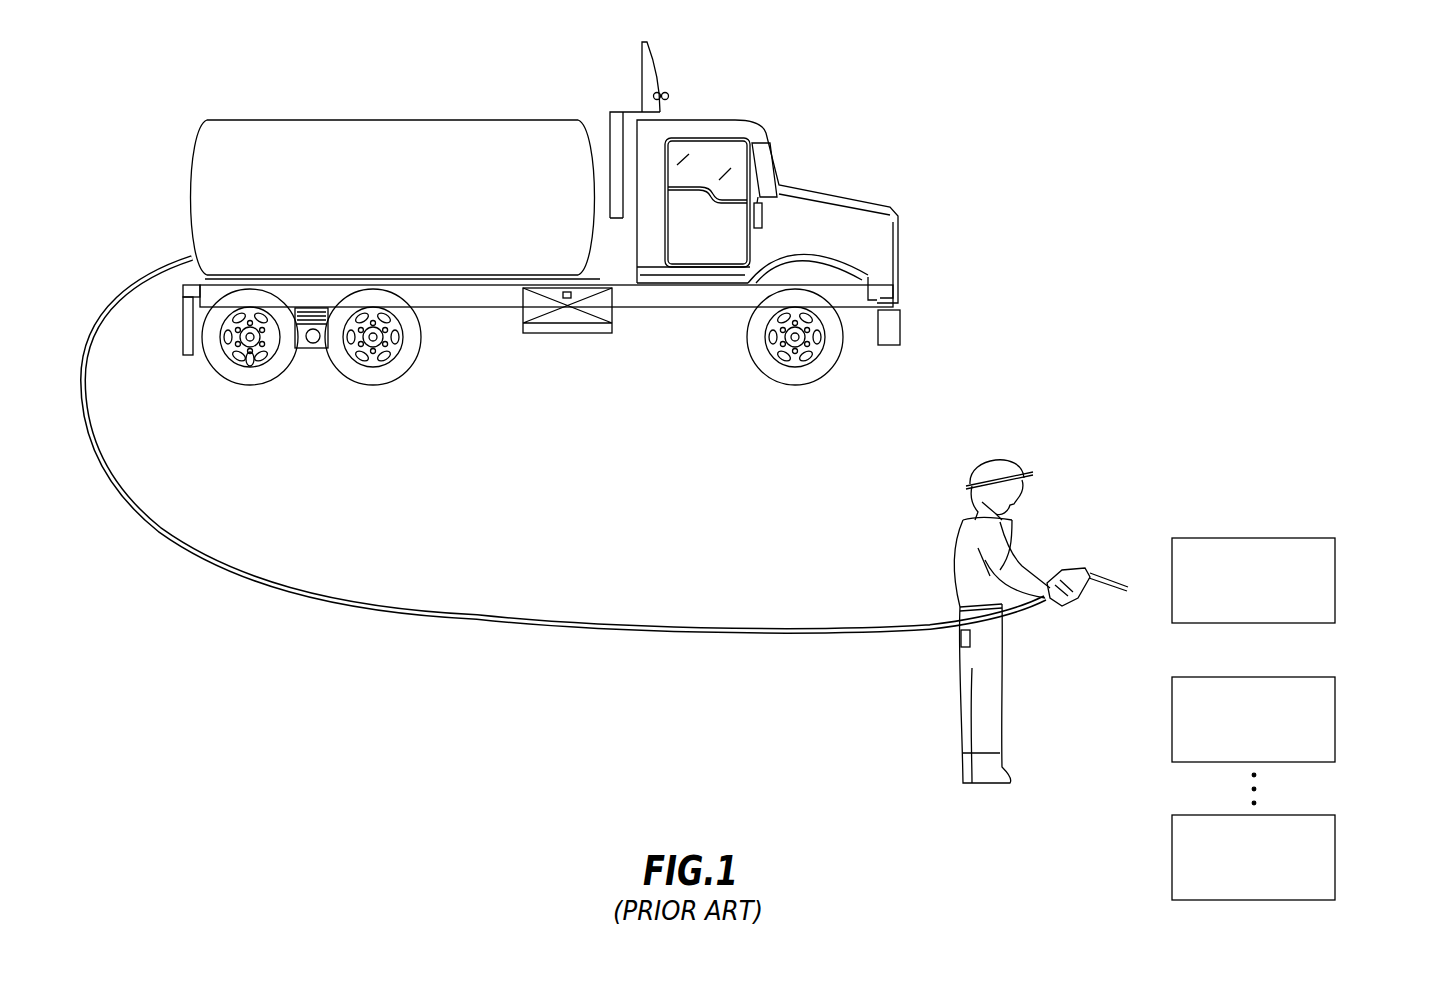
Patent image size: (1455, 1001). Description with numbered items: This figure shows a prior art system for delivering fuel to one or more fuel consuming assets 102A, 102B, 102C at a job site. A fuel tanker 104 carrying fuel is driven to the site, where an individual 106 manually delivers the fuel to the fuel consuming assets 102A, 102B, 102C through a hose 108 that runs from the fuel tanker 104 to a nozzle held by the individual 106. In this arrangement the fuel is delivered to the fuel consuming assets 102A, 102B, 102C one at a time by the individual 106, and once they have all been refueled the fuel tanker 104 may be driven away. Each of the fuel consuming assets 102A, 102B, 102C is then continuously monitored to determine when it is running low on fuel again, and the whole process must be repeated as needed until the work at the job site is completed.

The fuel consuming asset 102A is at (1337, 577).
The fuel consuming asset 102B is at (1337, 702).
The fuel consuming asset 102C is at (1337, 832).
The fuel tanker 104 is at (723, 120).
The individual 106 is at (1017, 455).
The hose 108 is at (347, 607).